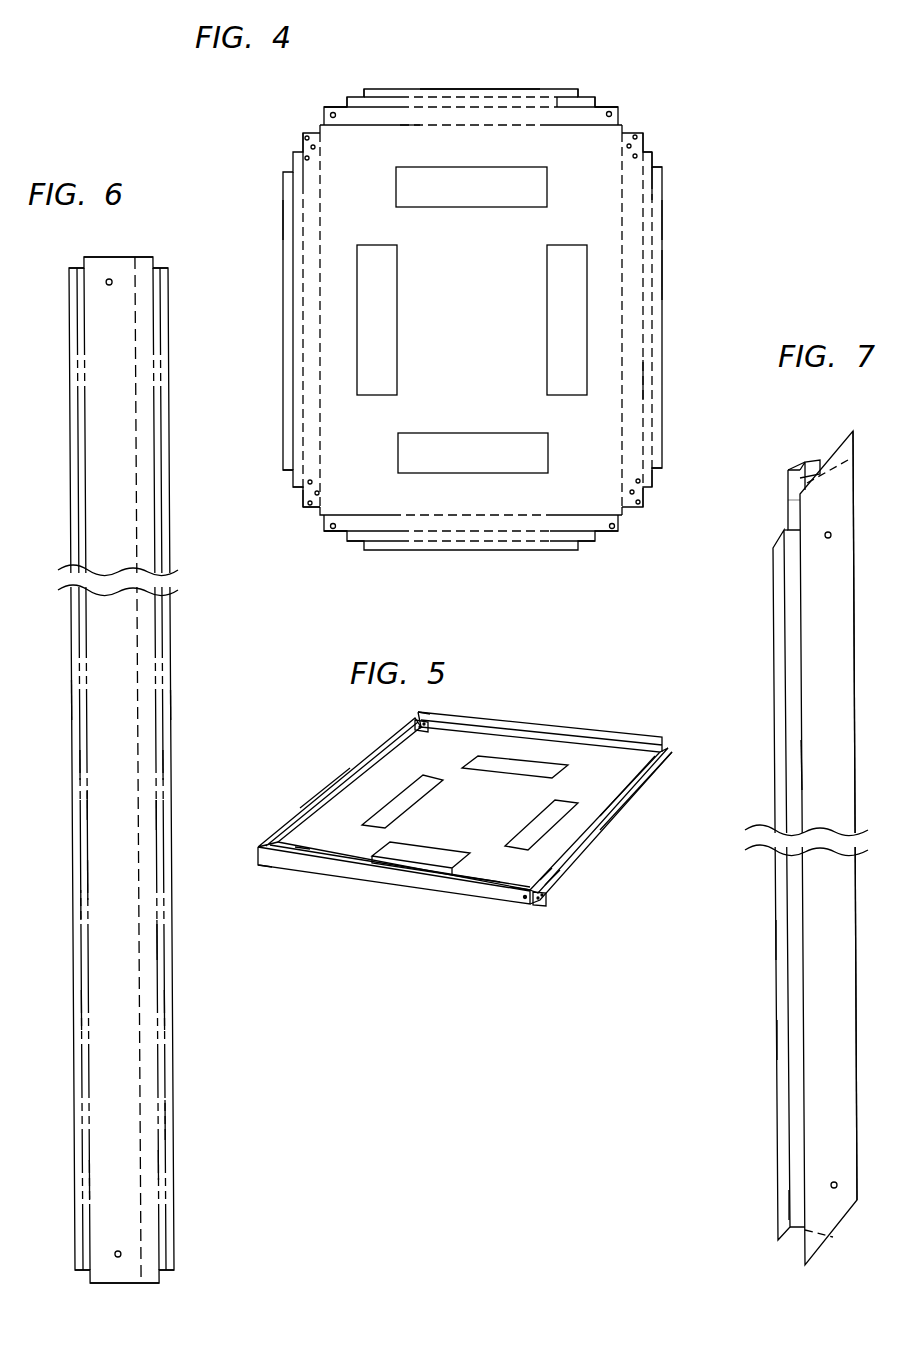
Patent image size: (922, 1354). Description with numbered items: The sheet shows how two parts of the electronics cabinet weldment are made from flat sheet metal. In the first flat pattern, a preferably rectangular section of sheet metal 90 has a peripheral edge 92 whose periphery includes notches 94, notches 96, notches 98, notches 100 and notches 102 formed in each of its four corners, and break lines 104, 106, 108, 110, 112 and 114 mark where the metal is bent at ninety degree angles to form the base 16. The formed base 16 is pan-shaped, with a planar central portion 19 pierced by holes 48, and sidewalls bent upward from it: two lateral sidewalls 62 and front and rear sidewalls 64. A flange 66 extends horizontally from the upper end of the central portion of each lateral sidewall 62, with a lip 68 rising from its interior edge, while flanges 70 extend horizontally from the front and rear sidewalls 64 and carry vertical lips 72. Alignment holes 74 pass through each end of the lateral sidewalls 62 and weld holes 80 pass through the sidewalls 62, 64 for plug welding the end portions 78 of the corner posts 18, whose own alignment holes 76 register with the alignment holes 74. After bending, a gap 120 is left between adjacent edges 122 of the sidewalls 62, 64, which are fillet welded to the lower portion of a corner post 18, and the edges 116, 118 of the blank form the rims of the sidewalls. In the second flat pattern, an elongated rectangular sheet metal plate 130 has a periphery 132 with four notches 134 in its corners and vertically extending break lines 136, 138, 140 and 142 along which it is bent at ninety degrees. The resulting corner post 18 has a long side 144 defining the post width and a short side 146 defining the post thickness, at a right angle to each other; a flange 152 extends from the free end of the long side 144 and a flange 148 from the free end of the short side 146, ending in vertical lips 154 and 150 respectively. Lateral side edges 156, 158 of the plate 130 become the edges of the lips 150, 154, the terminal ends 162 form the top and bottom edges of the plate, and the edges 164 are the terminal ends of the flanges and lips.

In FIG. 4, the base 16 is at (646, 138).
In FIG. 5, the base 16 is at (408, 888).
In FIG. 6, the corner post 18 is at (178, 1205).
In FIG. 7, the corner post 18 is at (848, 944).
In FIG. 5, the planar central portion 19 is at (468, 801).
In FIG. 4, the holes 48 is at (383, 370).
In FIG. 5, the holes 48 is at (432, 790).
In FIG. 4, the lateral sidewalls 62 is at (368, 117).
In FIG. 5, the lateral sidewalls 62 is at (518, 730).
In FIG. 4, the front and rear sidewalls 64 is at (636, 432).
In FIG. 5, the front and rear sidewalls 64 is at (365, 765).
In FIG. 4, the flange 66 is at (560, 118).
In FIG. 5, the flange 66 is at (415, 858).
In FIG. 4, the lip 68 is at (478, 98).
In FIG. 5, the lip 68 is at (312, 843).
In FIG. 4, the flanges 70 is at (645, 185).
In FIG. 5, the flanges 70 is at (620, 810).
In FIG. 4, the lips 72 is at (655, 258).
In FIG. 5, the lips 72 is at (596, 815).
In FIG. 4, the alignment holes 74 is at (590, 125).
In FIG. 6, the alignment holes 76 is at (105, 284).
In FIG. 7, the alignment holes 76 is at (833, 538).
In FIG. 6, the end portions 78 is at (115, 1178).
In FIG. 4, the weld holes 80 is at (640, 140).
In FIG. 4, the section of sheet metal 90 is at (575, 128).
In FIG. 4, the peripheral edge 92 is at (324, 119).
In FIG. 4, the notches 94 is at (325, 525).
In FIG. 4, the notches 96 is at (300, 500).
In FIG. 5, the notches 96 is at (550, 890).
In FIG. 4, the notches 98 is at (658, 470).
In FIG. 5, the notches 98 is at (545, 860).
In FIG. 4, the notches 100 is at (350, 538).
In FIG. 5, the notches 100 is at (525, 895).
In FIG. 4, the notches 102 is at (360, 560).
In FIG. 5, the notches 102 is at (455, 888).
In FIG. 4, the break line 104 is at (410, 125).
In FIG. 4, the break line 106 is at (300, 185).
In FIG. 4, the break line 108 is at (512, 103).
In FIG. 4, the break line 110 is at (400, 98).
In FIG. 4, the break line 112 is at (644, 374).
In FIG. 4, the break line 114 is at (652, 228).
In FIG. 4, the edges 116 is at (424, 89).
In FIG. 5, the edges 116 is at (455, 720).
In FIG. 4, the edges 118 is at (662, 288).
In FIG. 5, the edges 118 is at (328, 788).
In FIG. 5, the gap 120 is at (415, 726).
In FIG. 5, the edges 122 is at (540, 900).
In FIG. 6, the sheet metal plate 130 is at (105, 432).
In FIG. 7, the sheet metal plate 130 is at (850, 672).
In FIG. 6, the periphery 132 is at (178, 1077).
In FIG. 6, the notches 134 is at (76, 270).
In FIG. 6, the break line 136 is at (165, 1166).
In FIG. 6, the break line 138 is at (160, 1130).
In FIG. 6, the break line 140 is at (78, 960).
In FIG. 6, the break line 142 is at (78, 1052).
In FIG. 6, the long side 144 is at (113, 887).
In FIG. 7, the long side 144 is at (815, 760).
In FIG. 6, the short side 146 is at (150, 940).
In FIG. 7, the short side 146 is at (820, 464).
In FIG. 6, the flange 148 is at (160, 822).
In FIG. 7, the flange 148 is at (803, 468).
In FIG. 6, the lip 150 is at (162, 770).
In FIG. 7, the lip 150 is at (795, 488).
In FIG. 6, the flange 152 is at (77, 760).
In FIG. 7, the flange 152 is at (795, 1207).
In FIG. 6, the lip 154 is at (78, 847).
In FIG. 7, the lip 154 is at (786, 1047).
In FIG. 6, the lateral side edge 156 is at (172, 700).
In FIG. 7, the lateral side edge 156 is at (787, 513).
In FIG. 6, the lateral side edge 158 is at (70, 697).
In FIG. 7, the lateral side edge 158 is at (776, 940).
In FIG. 6, the terminal ends 162 is at (100, 258).
In FIG. 7, the terminal ends 162 is at (788, 470).
In FIG. 7, the edges 164 is at (840, 455).